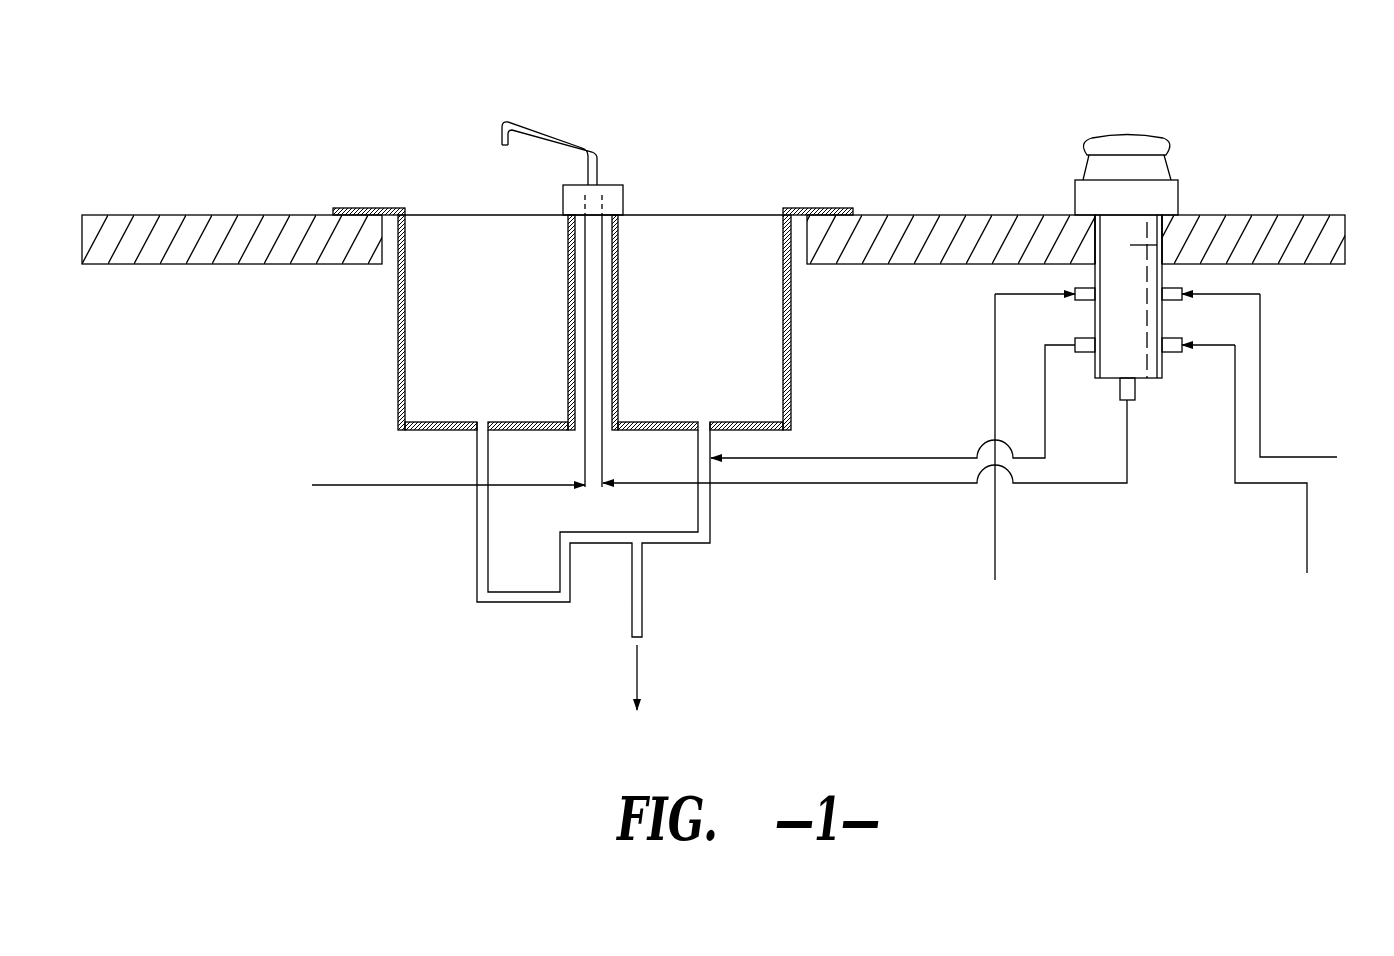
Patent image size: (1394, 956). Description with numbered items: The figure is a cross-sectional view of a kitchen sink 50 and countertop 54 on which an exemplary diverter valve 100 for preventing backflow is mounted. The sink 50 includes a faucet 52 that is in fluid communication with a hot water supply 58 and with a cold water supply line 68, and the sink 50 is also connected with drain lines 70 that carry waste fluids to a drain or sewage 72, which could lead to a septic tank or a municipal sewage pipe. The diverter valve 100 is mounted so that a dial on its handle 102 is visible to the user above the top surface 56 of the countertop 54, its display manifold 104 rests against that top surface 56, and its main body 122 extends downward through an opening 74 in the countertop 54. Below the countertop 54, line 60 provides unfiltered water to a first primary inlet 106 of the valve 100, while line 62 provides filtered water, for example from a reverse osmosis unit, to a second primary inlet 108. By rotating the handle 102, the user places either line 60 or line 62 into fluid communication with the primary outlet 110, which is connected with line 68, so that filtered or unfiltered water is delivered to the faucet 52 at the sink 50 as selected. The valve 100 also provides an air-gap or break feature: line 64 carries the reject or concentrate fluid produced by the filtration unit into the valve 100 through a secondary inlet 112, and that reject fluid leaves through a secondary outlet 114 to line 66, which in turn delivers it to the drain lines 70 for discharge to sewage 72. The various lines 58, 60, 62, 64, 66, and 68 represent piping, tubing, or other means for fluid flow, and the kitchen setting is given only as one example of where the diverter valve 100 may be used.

The kitchen sink 50 is at (397, 375).
The faucet 52 is at (560, 138).
The countertop 54 is at (177, 213).
The top surface 56 is at (940, 213).
The hot water supply 58 is at (427, 487).
The line 60 is at (1026, 456).
The line 62 is at (1282, 384).
The line 64 is at (1253, 478).
The line 66 is at (847, 458).
The cold water supply line 68 is at (826, 487).
The drain lines 70 is at (477, 513).
The sewage 72 is at (637, 699).
The opening 74 is at (1092, 249).
The diverter valve 100 is at (1198, 204).
The handle 102 is at (1122, 145).
The display manifold 104 is at (1075, 193).
The first primary inlet 106 is at (1083, 290).
The second primary inlet 108 is at (1175, 290).
The primary outlet 110 is at (1137, 388).
The secondary inlet 112 is at (1174, 338).
The secondary outlet 114 is at (1084, 338).
The main body 122 is at (1157, 245).